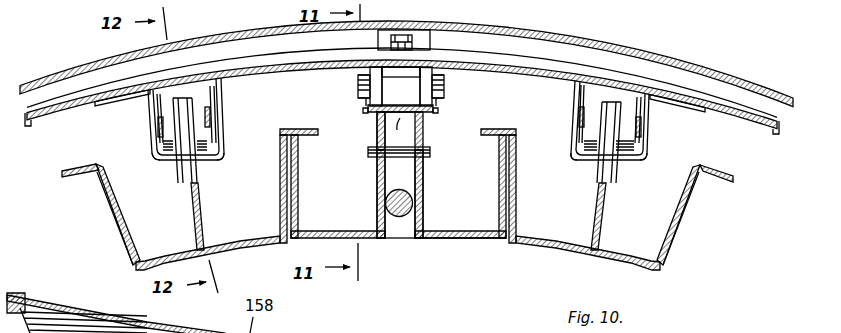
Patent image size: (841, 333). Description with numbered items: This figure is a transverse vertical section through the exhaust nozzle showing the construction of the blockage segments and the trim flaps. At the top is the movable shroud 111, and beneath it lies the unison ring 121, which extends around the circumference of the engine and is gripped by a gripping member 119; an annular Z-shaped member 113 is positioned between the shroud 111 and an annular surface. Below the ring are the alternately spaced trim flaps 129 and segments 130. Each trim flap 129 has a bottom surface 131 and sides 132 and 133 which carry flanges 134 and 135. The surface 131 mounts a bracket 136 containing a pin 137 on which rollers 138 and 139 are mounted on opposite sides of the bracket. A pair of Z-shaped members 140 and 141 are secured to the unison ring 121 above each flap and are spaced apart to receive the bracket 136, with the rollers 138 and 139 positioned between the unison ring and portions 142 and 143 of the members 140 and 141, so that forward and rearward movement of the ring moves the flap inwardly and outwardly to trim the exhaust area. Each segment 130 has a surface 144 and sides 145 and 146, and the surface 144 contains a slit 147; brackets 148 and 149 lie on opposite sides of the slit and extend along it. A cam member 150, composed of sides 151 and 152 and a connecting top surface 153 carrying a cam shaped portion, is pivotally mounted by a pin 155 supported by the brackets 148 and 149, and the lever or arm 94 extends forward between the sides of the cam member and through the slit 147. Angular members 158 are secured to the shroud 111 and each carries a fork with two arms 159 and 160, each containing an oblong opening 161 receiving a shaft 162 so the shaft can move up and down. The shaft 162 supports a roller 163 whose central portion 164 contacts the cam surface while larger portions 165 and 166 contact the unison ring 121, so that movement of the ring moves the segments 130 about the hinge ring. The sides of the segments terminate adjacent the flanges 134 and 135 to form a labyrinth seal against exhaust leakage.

The lever 94 is at (412, 209).
The movable shroud 111 is at (684, 63).
The annular Z-shaped member 113 is at (17, 302).
The gripping member 119 is at (414, 34).
The unison ring 121 is at (513, 58).
The trim flap 129 is at (108, 221).
The segment 130 is at (446, 244).
The bottom surface 131 is at (238, 249).
The side 132 is at (280, 158).
The side 133 is at (126, 226).
The flange 134 is at (297, 128).
The flange 135 is at (65, 170).
The bracket 136 is at (205, 211).
The pin 137 is at (163, 132).
The roller 138 is at (165, 102).
The roller 139 is at (200, 128).
The Z-shaped member 140 is at (160, 126).
The Z-shaped member 141 is at (214, 98).
The portion 142 is at (173, 162).
The portion 143 is at (207, 160).
The surface 144 is at (339, 241).
The side 145 is at (299, 175).
The side 146 is at (500, 175).
The slit 147 is at (410, 238).
The bracket 148 is at (377, 203).
The bracket 149 is at (424, 198).
The cam member 150 is at (374, 118).
The side 151 is at (379, 128).
The side 152 is at (423, 128).
The top surface 153 is at (402, 114).
The pin 155 is at (430, 152).
The angular member 158 is at (391, 31).
The arm 159 is at (358, 79).
The arm 160 is at (444, 79).
The oblong opening 161 is at (362, 100).
The shaft 162 is at (358, 90).
The roller 163 is at (406, 73).
The central portion 164 is at (402, 86).
The roller portion 165 is at (408, 74).
The roller portion 166 is at (377, 68).